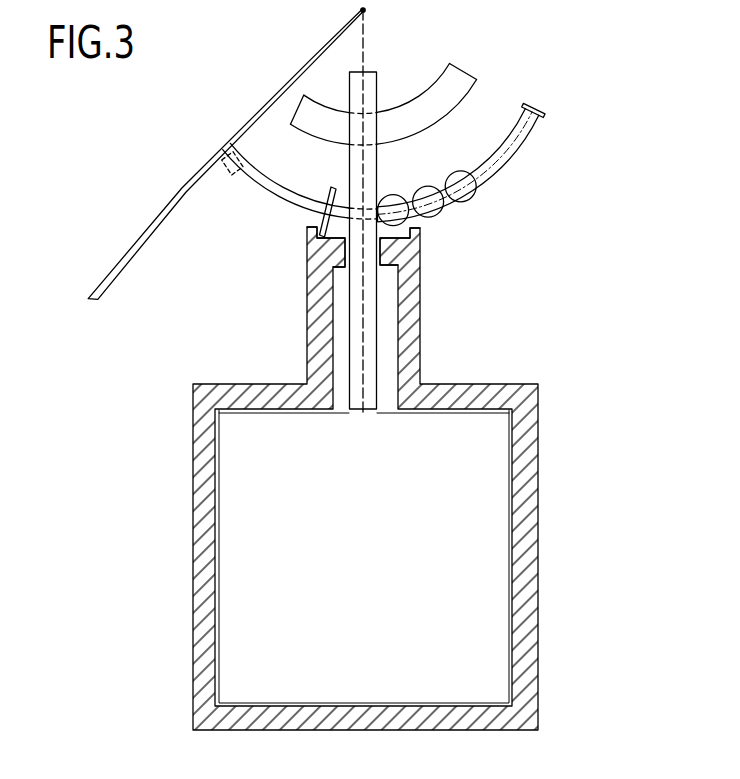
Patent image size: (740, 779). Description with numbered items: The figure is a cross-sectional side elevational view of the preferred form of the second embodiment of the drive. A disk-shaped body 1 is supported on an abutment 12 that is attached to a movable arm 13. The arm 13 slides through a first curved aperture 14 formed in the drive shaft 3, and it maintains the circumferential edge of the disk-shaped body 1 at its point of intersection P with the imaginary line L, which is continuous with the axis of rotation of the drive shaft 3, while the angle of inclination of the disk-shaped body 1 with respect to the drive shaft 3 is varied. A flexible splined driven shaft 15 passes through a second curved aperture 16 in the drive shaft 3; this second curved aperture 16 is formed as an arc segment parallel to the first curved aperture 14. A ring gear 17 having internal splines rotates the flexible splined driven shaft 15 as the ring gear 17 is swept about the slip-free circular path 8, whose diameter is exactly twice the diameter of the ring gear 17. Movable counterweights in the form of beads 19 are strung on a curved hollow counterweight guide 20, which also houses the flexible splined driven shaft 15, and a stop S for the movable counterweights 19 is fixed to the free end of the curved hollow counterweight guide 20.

The disk-shaped body 1 is at (272, 102).
The drive shaft 3 is at (370, 335).
The slip-free path 8 is at (421, 236).
The abutment 12 is at (230, 176).
The movable arm 13 is at (462, 66).
The first curved aperture 14 is at (377, 100).
The flexible splined driven shaft 15 is at (283, 208).
The second curved aperture 16 is at (360, 205).
The ring gear 17 is at (312, 229).
The beads 19 is at (442, 185).
The curved hollow counterweight guide 20 is at (524, 146).
The point of intersection P is at (362, 10).
The stop S is at (540, 110).
The imaginary line L is at (363, 289).